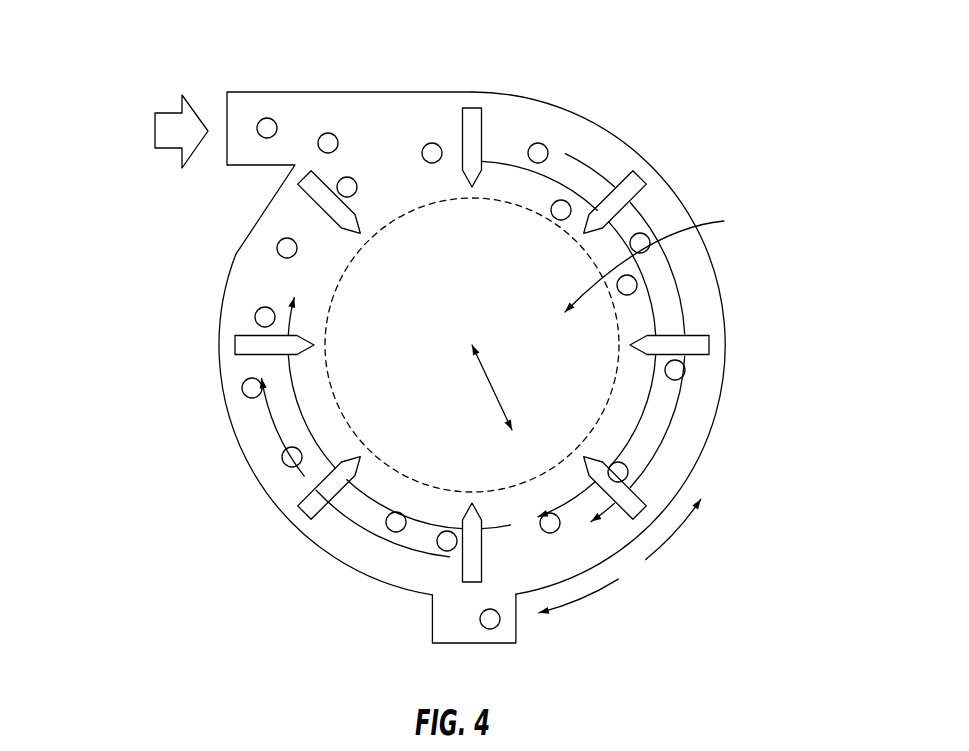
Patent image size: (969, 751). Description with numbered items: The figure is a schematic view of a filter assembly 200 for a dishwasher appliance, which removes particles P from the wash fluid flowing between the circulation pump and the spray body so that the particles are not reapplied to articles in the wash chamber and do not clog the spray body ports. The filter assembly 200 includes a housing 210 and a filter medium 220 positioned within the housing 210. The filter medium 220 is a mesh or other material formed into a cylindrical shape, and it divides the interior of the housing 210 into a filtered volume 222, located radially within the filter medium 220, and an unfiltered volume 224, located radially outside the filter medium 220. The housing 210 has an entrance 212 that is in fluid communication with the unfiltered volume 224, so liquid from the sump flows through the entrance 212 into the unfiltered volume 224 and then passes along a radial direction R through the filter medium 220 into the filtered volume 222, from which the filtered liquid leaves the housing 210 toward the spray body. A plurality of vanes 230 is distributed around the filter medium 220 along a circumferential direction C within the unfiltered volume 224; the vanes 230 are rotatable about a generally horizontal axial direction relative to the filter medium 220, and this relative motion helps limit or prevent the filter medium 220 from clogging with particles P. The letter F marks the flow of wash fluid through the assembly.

The filter assembly 200 is at (487, 336).
The housing 210 is at (475, 336).
The entrance 212 is at (227, 88).
The filter medium 220 is at (376, 240).
The filtered volume 222 is at (667, 255).
The unfiltered volume 224 is at (250, 275).
The vanes 230 is at (473, 108).
The particles P is at (339, 139).
The radial direction R is at (495, 392).
The circumferential direction C is at (620, 556).
The fluid flow F is at (155, 112).